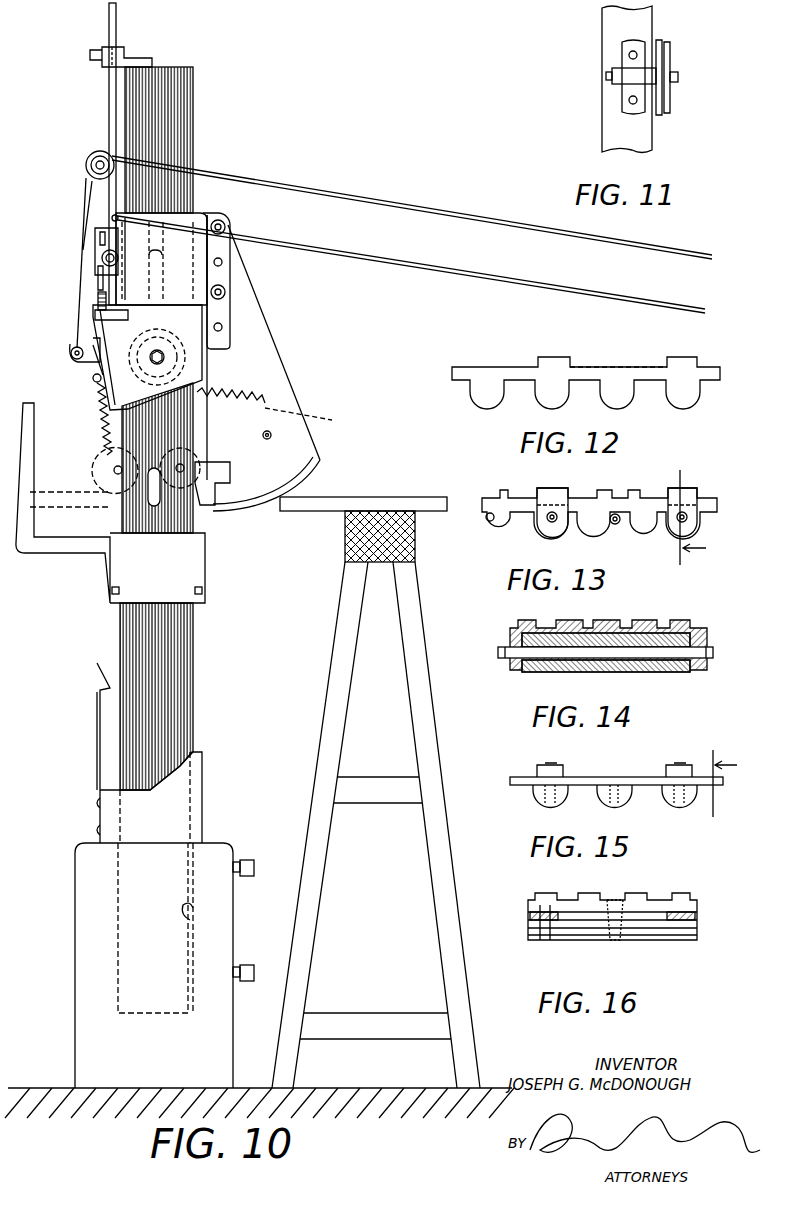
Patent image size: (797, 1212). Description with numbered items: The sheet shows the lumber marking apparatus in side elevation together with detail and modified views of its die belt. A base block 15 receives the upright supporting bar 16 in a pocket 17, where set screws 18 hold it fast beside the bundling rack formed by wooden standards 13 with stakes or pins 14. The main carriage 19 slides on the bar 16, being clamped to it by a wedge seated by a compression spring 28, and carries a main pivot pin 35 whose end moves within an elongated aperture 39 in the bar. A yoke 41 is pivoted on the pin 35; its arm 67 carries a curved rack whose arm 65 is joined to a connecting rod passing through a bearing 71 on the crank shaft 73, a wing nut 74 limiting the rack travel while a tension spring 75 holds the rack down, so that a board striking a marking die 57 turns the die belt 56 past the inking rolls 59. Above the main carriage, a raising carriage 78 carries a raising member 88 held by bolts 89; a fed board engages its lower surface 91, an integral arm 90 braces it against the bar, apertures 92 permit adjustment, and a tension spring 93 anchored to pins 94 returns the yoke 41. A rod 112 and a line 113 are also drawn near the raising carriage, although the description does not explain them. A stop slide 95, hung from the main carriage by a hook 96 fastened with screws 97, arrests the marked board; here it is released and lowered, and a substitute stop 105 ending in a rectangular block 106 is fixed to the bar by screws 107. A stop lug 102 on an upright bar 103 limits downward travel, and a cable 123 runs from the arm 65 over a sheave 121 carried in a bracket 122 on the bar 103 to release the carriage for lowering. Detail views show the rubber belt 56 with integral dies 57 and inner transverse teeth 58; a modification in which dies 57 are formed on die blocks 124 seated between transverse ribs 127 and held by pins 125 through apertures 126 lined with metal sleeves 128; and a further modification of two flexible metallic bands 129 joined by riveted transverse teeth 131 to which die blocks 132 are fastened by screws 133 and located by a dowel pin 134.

In FIG. 10, the wooden standards 13 is at (350, 560).
In FIG. 13, the stakes or pins 14 is at (689, 522).
In FIG. 10, the base block 15 is at (98, 930).
In FIG. 10, the upright supporting bar 16 is at (155, 110).
In FIG. 15, the upright supporting bar 16 is at (720, 785).
In FIG. 10, the pocket 17 is at (193, 927).
In FIG. 10, the set screws 18 is at (255, 870).
In FIG. 10, the main carriage 19 is at (182, 323).
In FIG. 10, the compression spring 28 is at (98, 298).
In FIG. 10, the main pivot pin 35 is at (165, 360).
In FIG. 10, the elongated aperture 39 is at (157, 512).
In FIG. 10, the yoke 41 is at (143, 537).
In FIG. 10, the endless flexible die belt 56 is at (205, 433).
In FIG. 12, the endless flexible die belt 56 is at (518, 368).
In FIG. 13, the endless flexible die belt 56 is at (525, 510).
In FIG. 12, the marking dies 57 is at (555, 352).
In FIG. 13, the marking dies 57 is at (548, 495).
In FIG. 14, the marking dies 57 is at (615, 620).
In FIG. 15, the marking dies 57 is at (545, 762).
In FIG. 16, the marking dies 57 is at (585, 893).
In FIG. 12, the transverse teeth 58 is at (542, 398).
In FIG. 13, the transverse teeth 58 is at (492, 530).
In FIG. 14, the transverse teeth 58 is at (660, 672).
In FIG. 10, the inking rolls 59 is at (112, 492).
In FIG. 10, the arm 65 is at (90, 370).
In FIG. 10, the arm 67 is at (70, 350).
In FIG. 10, the bearing 71 is at (92, 258).
In FIG. 10, the crank shaft 73 is at (102, 263).
In FIG. 10, the wing nut 74 is at (95, 238).
In FIG. 10, the coiled tension spring 75 is at (110, 438).
In FIG. 10, the slide or carriage 78 is at (165, 216).
In FIG. 10, the raising member 88 is at (250, 362).
In FIG. 10, the bolts 89 is at (225, 227).
In FIG. 10, the transversely extending integral arm 90 is at (208, 503).
In FIG. 10, the lower surface 91 is at (300, 490).
In FIG. 10, the apertures 92 is at (223, 262).
In FIG. 10, the tension spring 93 is at (279, 409).
In FIG. 10, the pins 94 is at (272, 435).
In FIG. 10, the slide 95 is at (155, 812).
In FIG. 10, the hook 96 is at (97, 703).
In FIG. 10, the screws 97 is at (97, 805).
In FIG. 10, the stop lug 102 is at (135, 58).
In FIG. 10, the upright bar 103 is at (108, 13).
In FIG. 11, the upright bar 103 is at (622, 22).
In FIG. 10, the stop 105 is at (33, 465).
In FIG. 10, the rectangular block 106 is at (190, 612).
In FIG. 10, the screws 107 is at (112, 592).
In FIG. 10, the rod 112 is at (128, 240).
In FIG. 10, the cable 113 is at (355, 252).
In FIG. 10, the sheave 121 is at (85, 165).
In FIG. 11, the sheave 121 is at (665, 55).
In FIG. 10, the bracket 122 is at (105, 153).
In FIG. 11, the bracket 122 is at (628, 78).
In FIG. 10, the flexible rope or cable 123 is at (352, 195).
In FIG. 13, the die blocks 124 is at (545, 495).
In FIG. 14, the die blocks 124 is at (700, 630).
In FIG. 13, the pins 125 is at (698, 525).
In FIG. 14, the pins 125 is at (714, 653).
In FIG. 13, the apertures 126 is at (620, 522).
In FIG. 13, the transverse ribs 127 is at (507, 497).
In FIG. 13, the metal sleeves 128 is at (486, 520).
In FIG. 14, the metal sleeves 128 is at (525, 665).
In FIG. 15, the flexible metallic bands 129 is at (585, 780).
In FIG. 16, the flexible metallic bands 129 is at (530, 916).
In FIG. 15, the transverse teeth 131 is at (600, 806).
In FIG. 15, the die blocks 132 is at (533, 770).
In FIG. 16, the die blocks 132 is at (650, 905).
In FIG. 15, the screws 133 is at (572, 777).
In FIG. 16, the screws 133 is at (640, 930).
In FIG. 16, the dowel pin 134 is at (550, 940).